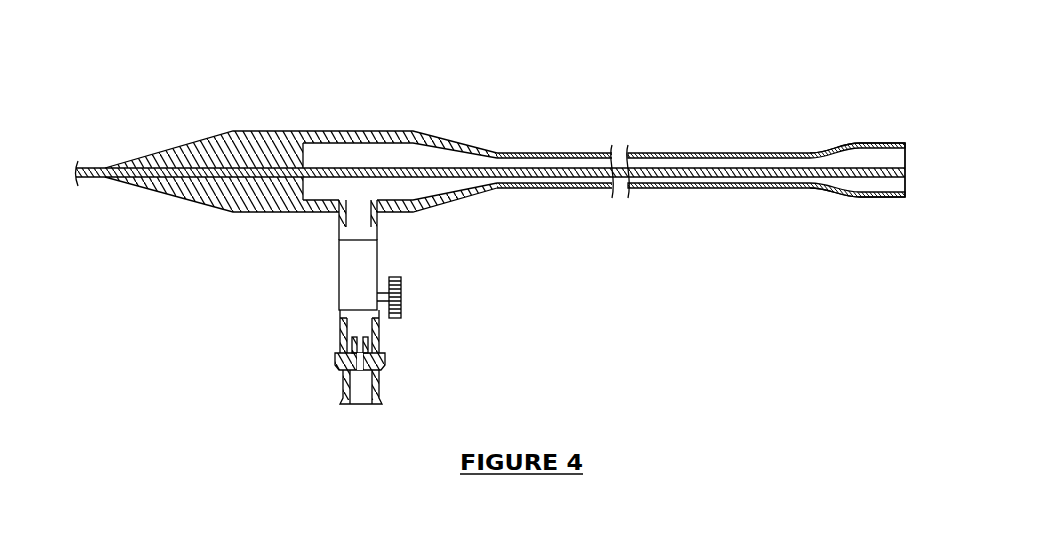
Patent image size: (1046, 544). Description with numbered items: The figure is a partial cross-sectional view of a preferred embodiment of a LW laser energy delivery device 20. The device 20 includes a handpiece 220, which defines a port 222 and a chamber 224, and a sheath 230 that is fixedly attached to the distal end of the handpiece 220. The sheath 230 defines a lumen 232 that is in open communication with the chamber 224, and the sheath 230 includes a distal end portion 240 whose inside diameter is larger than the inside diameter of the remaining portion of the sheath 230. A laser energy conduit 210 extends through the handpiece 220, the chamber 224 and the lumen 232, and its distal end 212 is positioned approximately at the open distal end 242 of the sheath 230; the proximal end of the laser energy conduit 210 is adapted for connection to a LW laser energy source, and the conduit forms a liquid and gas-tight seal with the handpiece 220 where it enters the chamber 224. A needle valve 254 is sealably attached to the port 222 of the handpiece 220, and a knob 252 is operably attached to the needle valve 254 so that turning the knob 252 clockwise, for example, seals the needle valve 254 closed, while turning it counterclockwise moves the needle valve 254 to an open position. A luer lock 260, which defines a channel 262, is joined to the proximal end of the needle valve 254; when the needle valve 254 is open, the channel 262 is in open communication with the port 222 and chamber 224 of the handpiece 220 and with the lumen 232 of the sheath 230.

The device 20 is at (692, 263).
The laser energy conduit 210 is at (92, 165).
The distal end of laser energy conduit 212 is at (905, 175).
The handpiece 220 is at (240, 130).
The port 222 is at (360, 197).
The chamber 224 is at (343, 155).
The sheath 230 is at (673, 155).
The lumen 232 is at (582, 163).
The distal end portion 240 is at (868, 143).
The open distal end 242 is at (905, 153).
The knob 252 is at (401, 298).
The needle valve 254 is at (366, 267).
The luer lock 260 is at (382, 400).
The channel 262 is at (357, 372).